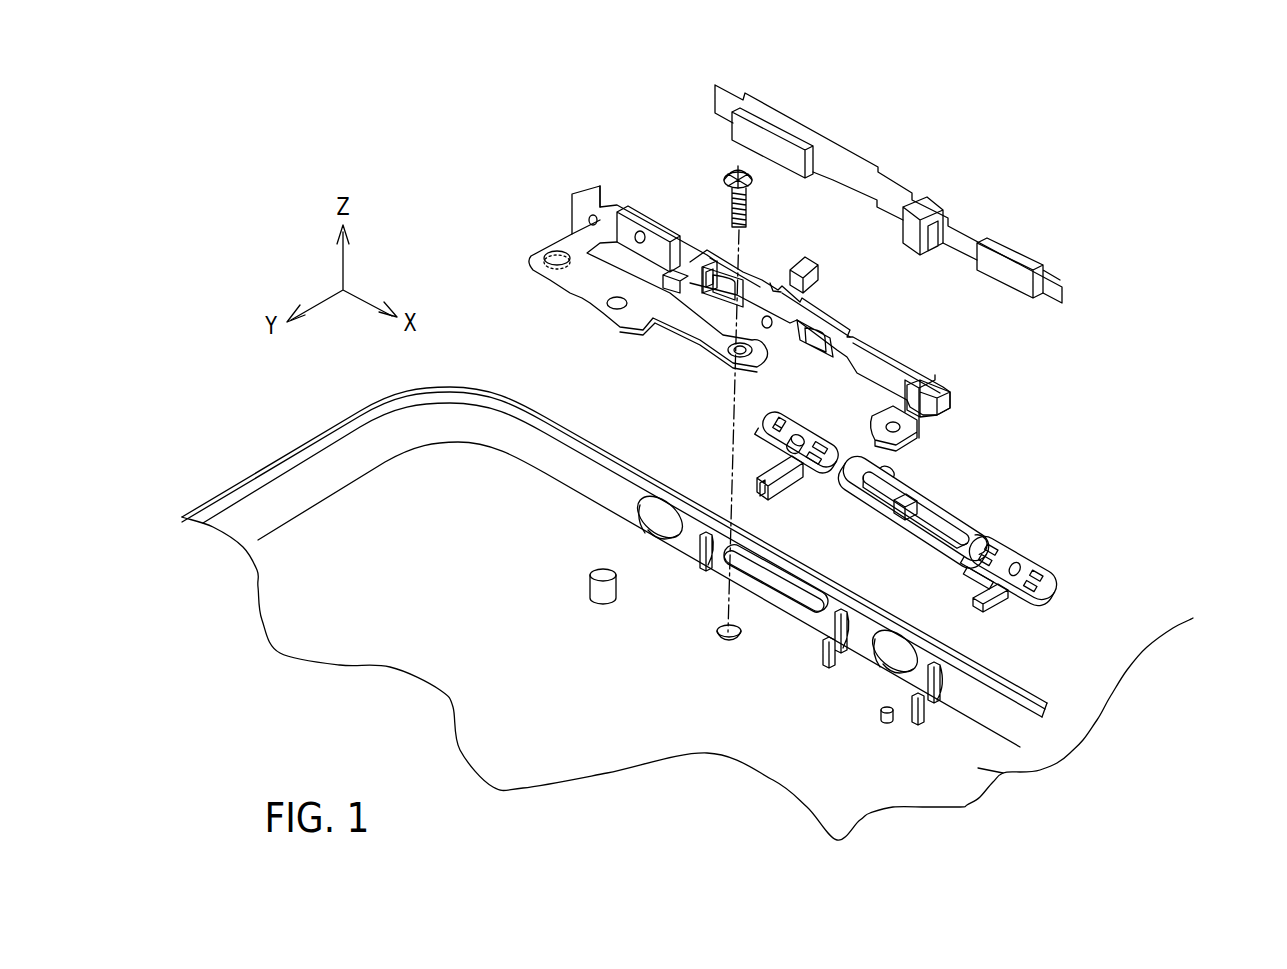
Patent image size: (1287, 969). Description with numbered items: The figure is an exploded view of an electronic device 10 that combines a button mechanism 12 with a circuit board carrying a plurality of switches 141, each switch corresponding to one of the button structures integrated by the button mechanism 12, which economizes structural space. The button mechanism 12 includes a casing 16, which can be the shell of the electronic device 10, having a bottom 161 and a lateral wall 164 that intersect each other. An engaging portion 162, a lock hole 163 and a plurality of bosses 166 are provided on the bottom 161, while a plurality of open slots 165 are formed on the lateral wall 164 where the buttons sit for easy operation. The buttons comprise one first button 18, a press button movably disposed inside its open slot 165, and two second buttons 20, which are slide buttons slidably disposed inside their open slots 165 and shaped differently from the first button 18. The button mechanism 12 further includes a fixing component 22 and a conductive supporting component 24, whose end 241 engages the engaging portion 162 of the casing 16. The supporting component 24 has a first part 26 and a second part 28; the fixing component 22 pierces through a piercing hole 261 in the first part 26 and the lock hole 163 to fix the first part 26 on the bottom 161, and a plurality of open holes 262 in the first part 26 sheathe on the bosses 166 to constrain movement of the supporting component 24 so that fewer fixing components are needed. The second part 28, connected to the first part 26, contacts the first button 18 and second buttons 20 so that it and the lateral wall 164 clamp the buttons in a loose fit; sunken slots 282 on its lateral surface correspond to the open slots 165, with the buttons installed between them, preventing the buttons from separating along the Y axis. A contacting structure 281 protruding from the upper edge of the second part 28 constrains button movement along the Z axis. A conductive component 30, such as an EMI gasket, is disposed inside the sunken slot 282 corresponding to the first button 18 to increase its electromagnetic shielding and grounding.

The electronic device 10 is at (1099, 196).
The button mechanism 12 is at (1012, 403).
The switches 141 is at (780, 178).
The casing 16 is at (1237, 606).
The bottom 161 is at (698, 678).
The engaging portion 162 is at (925, 712).
The lock hole 163 is at (732, 654).
The lateral wall 164 is at (1012, 682).
The open slots 165 is at (641, 538).
The bosses 166 is at (603, 602).
The first button 18 is at (934, 496).
The second buttons 20 is at (818, 483).
The fixing component 22 is at (733, 208).
The supporting component 24 is at (957, 420).
The end 241 is at (900, 440).
The first part 26 is at (648, 296).
The piercing hole 261 is at (733, 354).
The open holes 262 is at (613, 310).
The second part 28 is at (831, 323).
The contacting structure 281 is at (933, 387).
The sunken slots 282 is at (781, 280).
The conductive component 30 is at (803, 263).